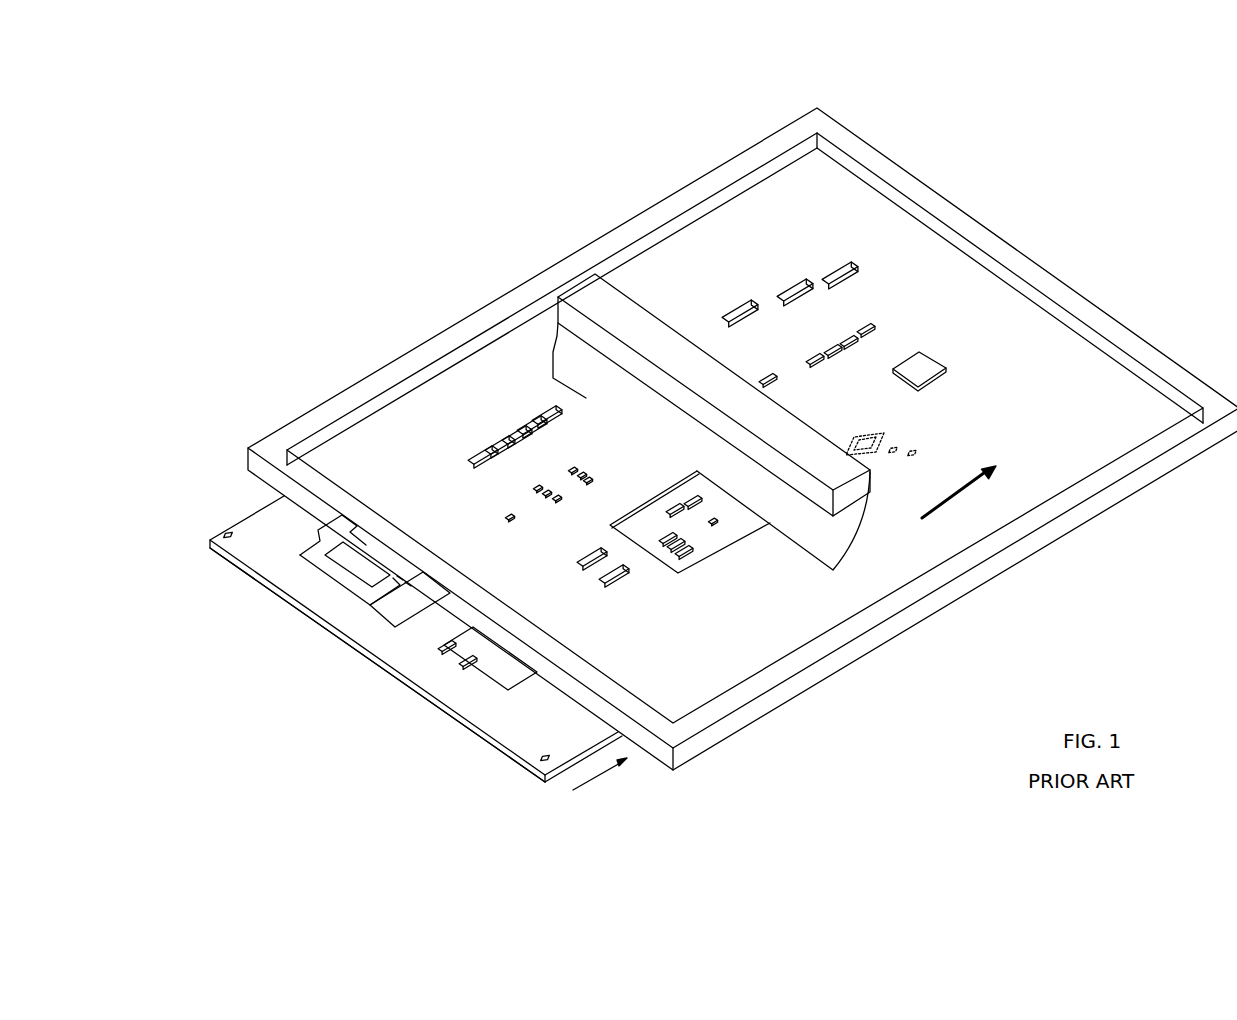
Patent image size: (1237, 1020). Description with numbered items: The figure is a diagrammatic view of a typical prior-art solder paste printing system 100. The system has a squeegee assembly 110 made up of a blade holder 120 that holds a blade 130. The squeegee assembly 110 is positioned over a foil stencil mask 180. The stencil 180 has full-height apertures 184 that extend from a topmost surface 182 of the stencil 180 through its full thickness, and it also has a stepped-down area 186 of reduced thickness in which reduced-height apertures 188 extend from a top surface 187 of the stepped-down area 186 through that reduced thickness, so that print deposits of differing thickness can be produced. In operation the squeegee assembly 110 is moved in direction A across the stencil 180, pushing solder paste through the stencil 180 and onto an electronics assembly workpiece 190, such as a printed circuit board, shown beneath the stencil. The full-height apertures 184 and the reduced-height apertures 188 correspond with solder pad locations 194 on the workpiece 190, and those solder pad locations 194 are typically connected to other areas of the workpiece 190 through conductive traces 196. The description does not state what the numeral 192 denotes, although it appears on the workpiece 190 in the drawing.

The solder paste printing system 100 is at (442, 110).
The squeegee assembly 110 is at (649, 294).
The blade holder 120 is at (587, 298).
The blade 130 is at (843, 545).
The foil stencil mask 180 is at (1073, 377).
The topmost surface 182 is at (983, 300).
The full-height apertures 184 is at (907, 357).
The stepped-down area 186 is at (720, 556).
The top surface of the stepped-down area 187 is at (738, 517).
The reduced-height apertures 188 is at (688, 553).
The electronics assembly workpiece 190 is at (391, 639).
The board substrate 192 is at (470, 703).
The solder pad locations 194 is at (367, 600).
The conductive traces 196 is at (312, 562).